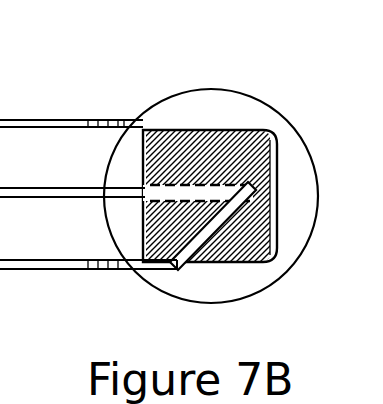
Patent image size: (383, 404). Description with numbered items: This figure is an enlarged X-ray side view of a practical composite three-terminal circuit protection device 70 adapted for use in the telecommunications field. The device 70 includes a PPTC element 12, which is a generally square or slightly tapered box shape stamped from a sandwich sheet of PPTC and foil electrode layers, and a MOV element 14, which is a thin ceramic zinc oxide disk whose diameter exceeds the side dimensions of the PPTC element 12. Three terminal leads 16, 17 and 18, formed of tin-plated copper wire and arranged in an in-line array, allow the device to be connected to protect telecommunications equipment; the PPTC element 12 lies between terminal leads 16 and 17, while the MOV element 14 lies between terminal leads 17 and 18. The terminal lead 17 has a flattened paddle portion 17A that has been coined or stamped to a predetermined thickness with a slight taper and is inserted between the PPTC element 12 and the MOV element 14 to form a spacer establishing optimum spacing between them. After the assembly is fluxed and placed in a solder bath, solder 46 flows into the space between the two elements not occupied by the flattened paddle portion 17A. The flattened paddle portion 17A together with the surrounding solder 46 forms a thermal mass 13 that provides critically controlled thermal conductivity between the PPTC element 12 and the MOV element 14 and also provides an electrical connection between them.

The composite three-terminal circuit protection device 70 is at (140, 89).
The thermal mass 13 is at (197, 150).
The PPTC element 12 is at (258, 128).
The solder 46 is at (266, 149).
The flattened paddle portion 17A is at (268, 206).
The MOV element 14 is at (242, 283).
The terminal lead 18 is at (67, 128).
The terminal lead 17 is at (60, 198).
The terminal lead 16 is at (55, 269).